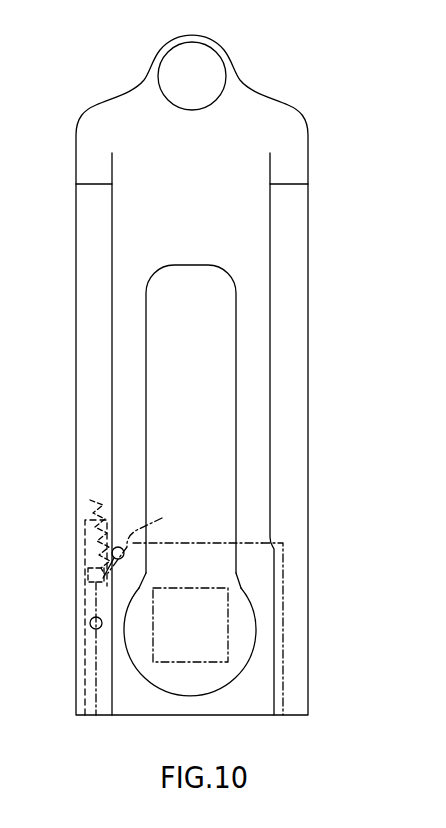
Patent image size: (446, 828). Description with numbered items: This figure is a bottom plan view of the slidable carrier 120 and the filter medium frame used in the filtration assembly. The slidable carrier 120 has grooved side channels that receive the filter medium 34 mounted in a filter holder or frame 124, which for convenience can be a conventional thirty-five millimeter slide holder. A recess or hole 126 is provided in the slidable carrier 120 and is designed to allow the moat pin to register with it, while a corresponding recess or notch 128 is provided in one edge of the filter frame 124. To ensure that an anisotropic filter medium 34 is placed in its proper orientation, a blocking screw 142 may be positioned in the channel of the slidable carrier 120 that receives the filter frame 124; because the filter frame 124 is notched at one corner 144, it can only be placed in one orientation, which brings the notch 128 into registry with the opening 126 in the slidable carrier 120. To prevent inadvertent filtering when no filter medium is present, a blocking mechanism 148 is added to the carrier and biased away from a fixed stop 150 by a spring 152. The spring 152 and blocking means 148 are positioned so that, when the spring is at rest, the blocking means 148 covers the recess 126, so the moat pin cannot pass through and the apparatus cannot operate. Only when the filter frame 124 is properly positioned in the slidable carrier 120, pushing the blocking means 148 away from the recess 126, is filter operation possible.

The slidable carrier 120 is at (352, 209).
The filter frame 124 is at (207, 677).
The filter medium 34 is at (200, 630).
The blocking screw 142 is at (122, 549).
The notched corner 144 is at (185, 541).
The fixed stop 150 is at (90, 500).
The spring 152 is at (85, 547).
The blocking mechanism 148 is at (88, 575).
The recess 126 is at (90, 624).
The notch 128 is at (96, 667).